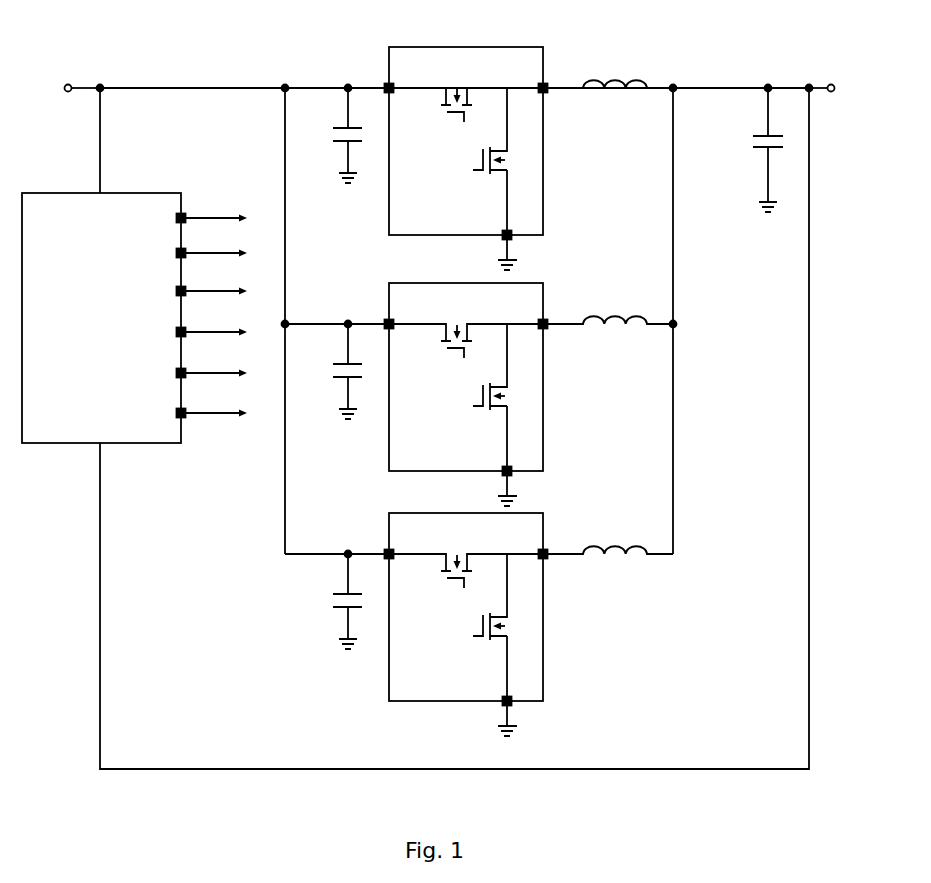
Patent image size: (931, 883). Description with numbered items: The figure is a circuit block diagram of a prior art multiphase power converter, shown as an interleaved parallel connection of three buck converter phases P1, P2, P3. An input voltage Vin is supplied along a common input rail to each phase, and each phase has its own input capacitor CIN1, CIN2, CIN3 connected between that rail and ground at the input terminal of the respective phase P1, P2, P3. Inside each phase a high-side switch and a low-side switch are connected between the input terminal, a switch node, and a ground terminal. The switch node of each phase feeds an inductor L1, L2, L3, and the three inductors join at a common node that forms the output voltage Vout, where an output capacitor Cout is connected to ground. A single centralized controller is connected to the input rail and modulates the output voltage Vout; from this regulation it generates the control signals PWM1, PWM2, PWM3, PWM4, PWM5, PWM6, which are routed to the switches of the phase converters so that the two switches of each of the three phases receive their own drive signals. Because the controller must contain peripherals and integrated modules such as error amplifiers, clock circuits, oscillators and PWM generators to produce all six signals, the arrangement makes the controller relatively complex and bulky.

The input voltage Vin is at (76, 77).
The output voltage Vout is at (830, 77).
The output capacitor Cout is at (746, 149).
The input capacitor of first phase CIN1 is at (329, 134).
The input capacitor of second phase CIN2 is at (329, 370).
The input capacitor of third phase CIN3 is at (329, 600).
The first phase P1 is at (474, 158).
The second phase P2 is at (474, 394).
The third phase P3 is at (474, 624).
The inductor of first phase L1 is at (608, 69).
The inductor of second phase L2 is at (608, 305).
The inductor of third phase L3 is at (608, 535).
The centralized controller is at (101, 318).
The control signal PWM1 is at (211, 210).
The control signal PWM2 is at (211, 245).
The control signal PWM3 is at (211, 283).
The control signal PWM4 is at (211, 324).
The control signal PWM5 is at (211, 365).
The control signal PWM6 is at (211, 405).